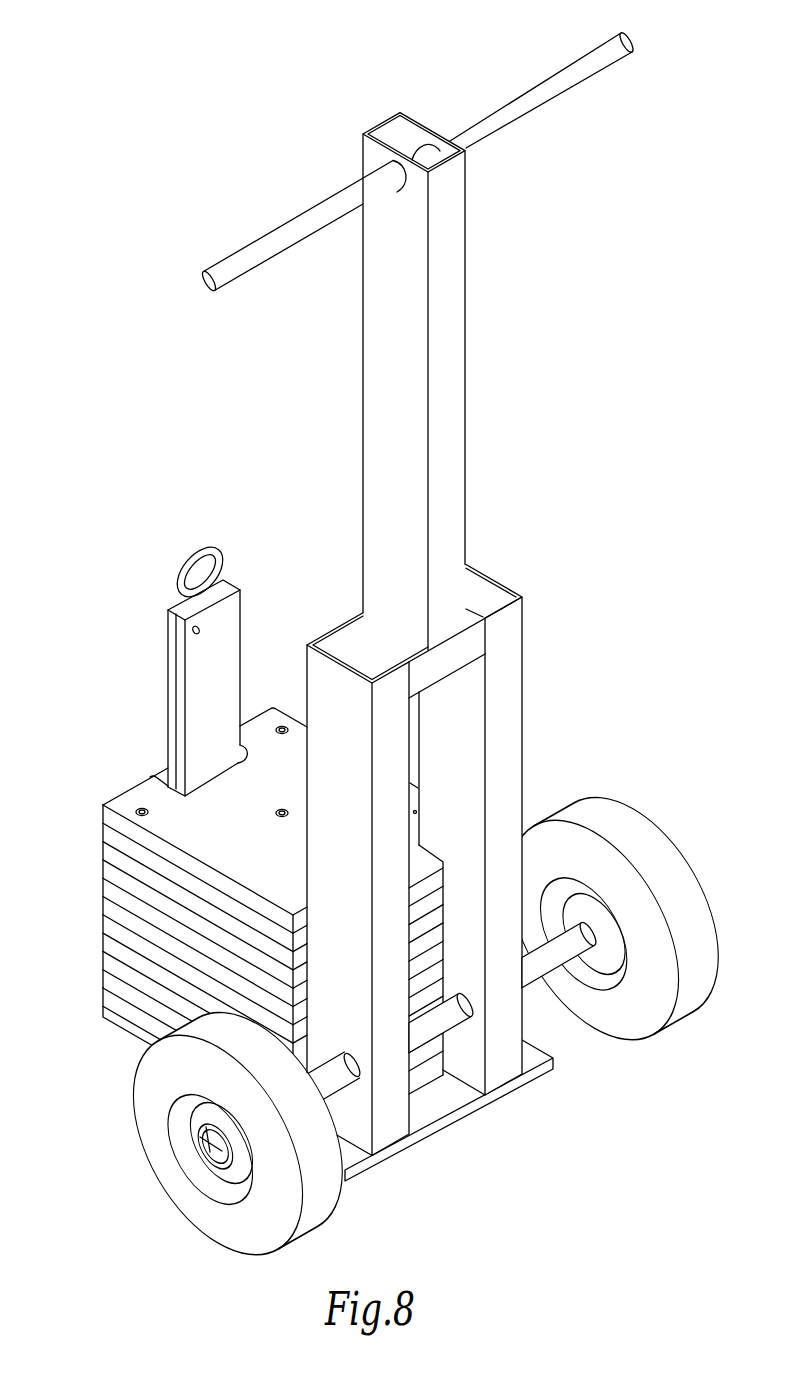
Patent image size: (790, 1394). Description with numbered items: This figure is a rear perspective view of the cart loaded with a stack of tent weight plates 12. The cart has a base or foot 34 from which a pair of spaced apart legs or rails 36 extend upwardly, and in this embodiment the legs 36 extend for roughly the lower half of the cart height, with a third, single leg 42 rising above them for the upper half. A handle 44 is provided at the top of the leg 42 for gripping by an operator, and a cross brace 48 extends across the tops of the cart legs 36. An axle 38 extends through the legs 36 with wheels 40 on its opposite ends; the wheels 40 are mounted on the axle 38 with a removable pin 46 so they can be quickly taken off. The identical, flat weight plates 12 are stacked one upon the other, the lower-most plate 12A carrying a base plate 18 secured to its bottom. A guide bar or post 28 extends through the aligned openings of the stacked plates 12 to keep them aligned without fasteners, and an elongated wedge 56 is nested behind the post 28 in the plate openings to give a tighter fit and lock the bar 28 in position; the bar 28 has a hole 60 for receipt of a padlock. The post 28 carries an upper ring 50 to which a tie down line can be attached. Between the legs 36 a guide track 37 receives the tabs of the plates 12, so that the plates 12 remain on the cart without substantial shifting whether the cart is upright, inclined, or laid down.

The tent weight plates 12 is at (103, 860).
The lower-most tent weight plate 12A is at (101, 1000).
The base plate 18 is at (120, 1030).
The guide bar 28 is at (175, 612).
The foot 34 is at (527, 1062).
The legs 36 is at (318, 690).
The guide track 37 is at (450, 817).
The axle 38 is at (577, 938).
The wheels 40 is at (622, 815).
The single leg 42 is at (458, 465).
The handle 44 is at (253, 243).
The removable pin 46 is at (197, 1134).
The cross brace 48 is at (360, 622).
The upper ring 50 is at (190, 561).
The wedge 56 is at (228, 610).
The hole 60 is at (200, 632).